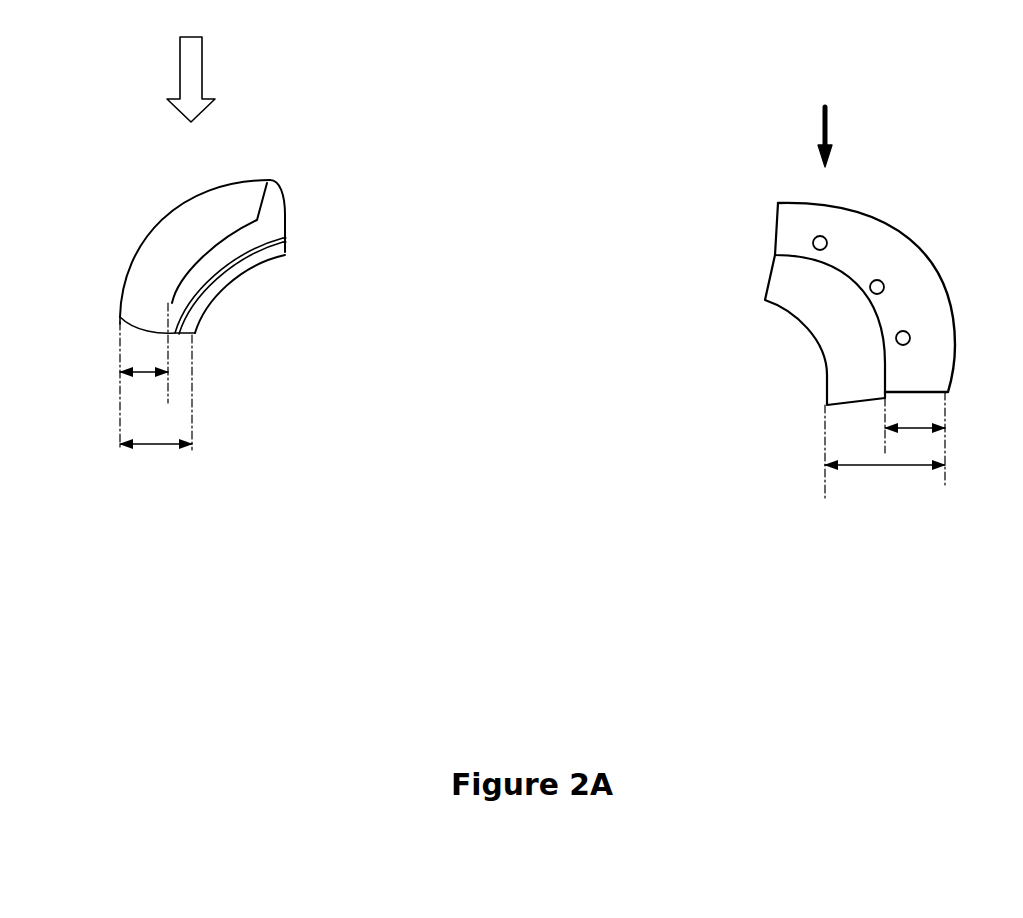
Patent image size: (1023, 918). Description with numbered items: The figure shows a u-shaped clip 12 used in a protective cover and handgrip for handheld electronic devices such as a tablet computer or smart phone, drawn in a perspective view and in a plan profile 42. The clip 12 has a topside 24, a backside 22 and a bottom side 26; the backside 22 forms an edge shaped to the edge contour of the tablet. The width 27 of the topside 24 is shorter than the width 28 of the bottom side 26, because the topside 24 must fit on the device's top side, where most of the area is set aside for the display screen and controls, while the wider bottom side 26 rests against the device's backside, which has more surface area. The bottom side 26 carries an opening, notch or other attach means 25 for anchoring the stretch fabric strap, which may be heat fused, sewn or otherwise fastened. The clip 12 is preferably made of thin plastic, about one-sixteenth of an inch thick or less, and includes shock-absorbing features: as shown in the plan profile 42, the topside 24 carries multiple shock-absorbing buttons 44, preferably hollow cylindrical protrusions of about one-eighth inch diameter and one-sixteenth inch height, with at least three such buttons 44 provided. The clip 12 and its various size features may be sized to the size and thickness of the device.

The clip 12 is at (199, 79).
The backside 22 is at (132, 240).
The topside 24 is at (228, 213).
The opening or attach means 25 is at (207, 293).
The bottom side 26 is at (228, 278).
The width of the topside 27 is at (140, 375).
The width of the bottom side 28 is at (168, 445).
The plan profile 42 is at (818, 125).
The shock-absorbing buttons 44 is at (886, 283).